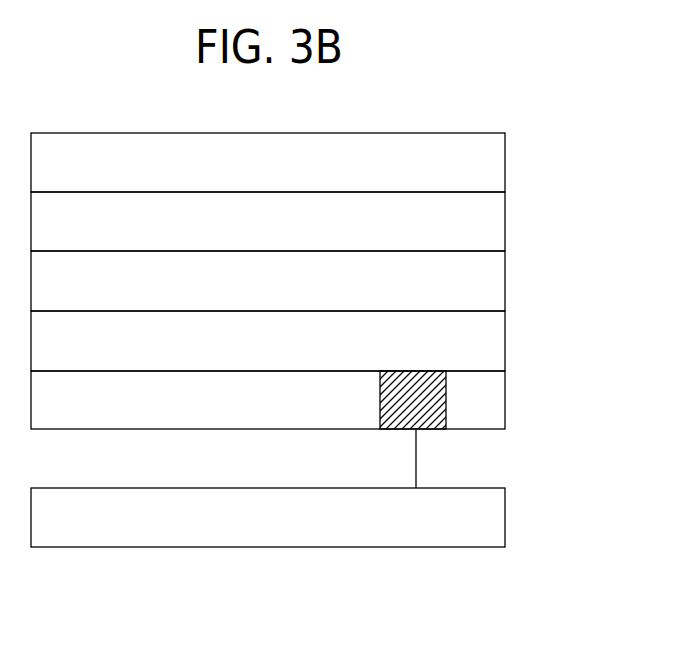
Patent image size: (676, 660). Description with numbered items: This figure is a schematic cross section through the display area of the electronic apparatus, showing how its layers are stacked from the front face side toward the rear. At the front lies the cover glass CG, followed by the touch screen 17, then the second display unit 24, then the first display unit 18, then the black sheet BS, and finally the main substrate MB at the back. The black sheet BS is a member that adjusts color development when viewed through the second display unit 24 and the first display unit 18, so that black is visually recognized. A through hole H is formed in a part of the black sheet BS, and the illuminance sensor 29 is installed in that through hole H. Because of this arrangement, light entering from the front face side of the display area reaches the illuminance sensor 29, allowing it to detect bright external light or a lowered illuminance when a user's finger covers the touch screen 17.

The cover glass CG is at (505, 162).
The touch screen 17 is at (505, 222).
The second display unit 24 is at (505, 282).
The first display unit 18 is at (505, 340).
The black sheet BS is at (505, 413).
The illuminance sensor 29 is at (437, 390).
The through hole H is at (437, 435).
The main substrate MB is at (505, 515).